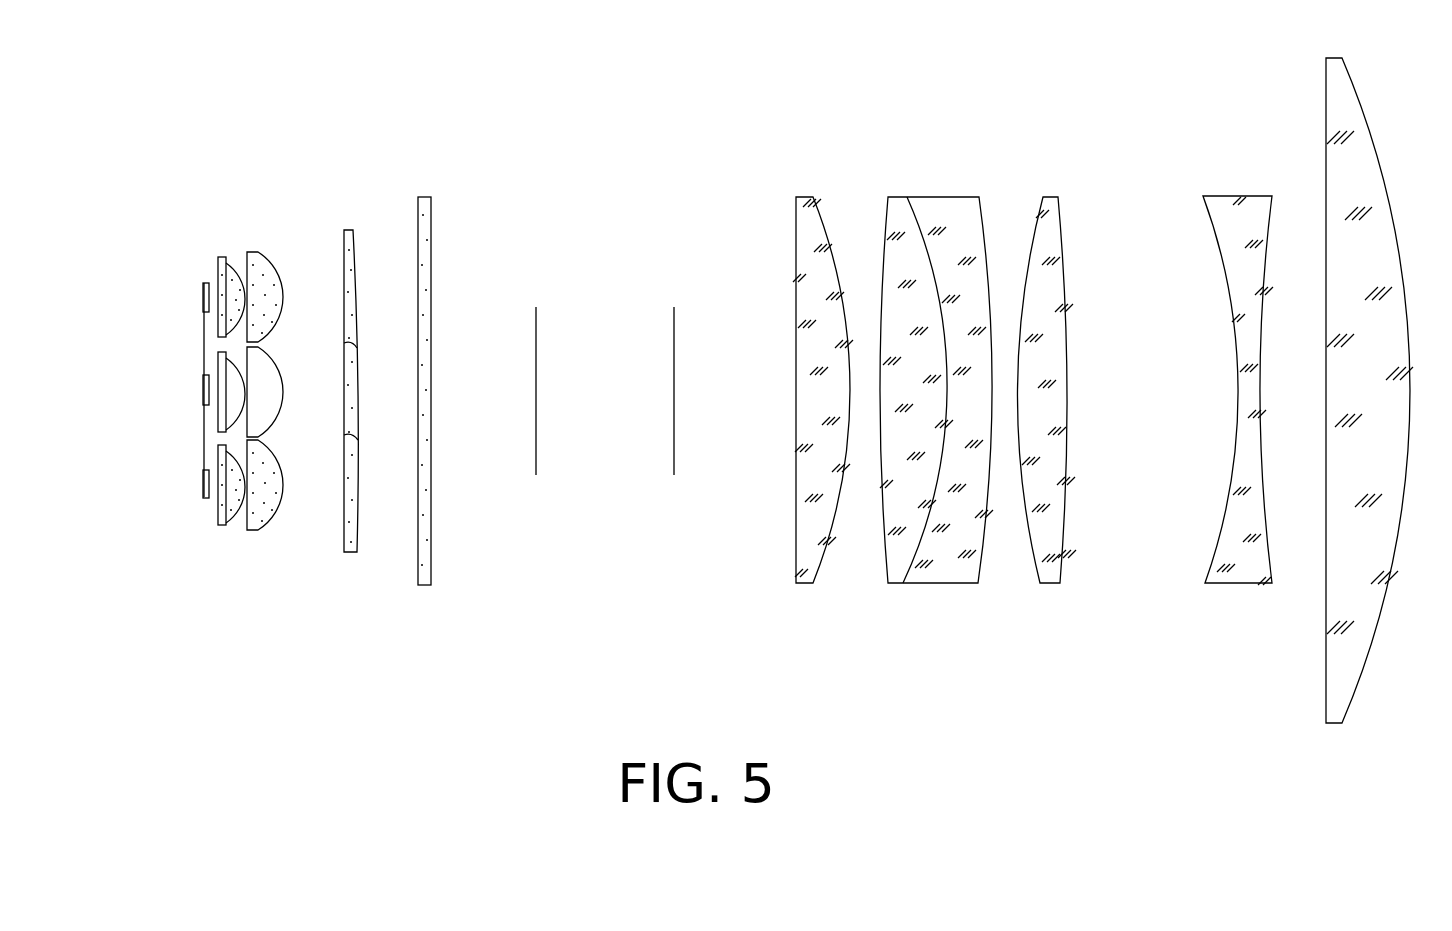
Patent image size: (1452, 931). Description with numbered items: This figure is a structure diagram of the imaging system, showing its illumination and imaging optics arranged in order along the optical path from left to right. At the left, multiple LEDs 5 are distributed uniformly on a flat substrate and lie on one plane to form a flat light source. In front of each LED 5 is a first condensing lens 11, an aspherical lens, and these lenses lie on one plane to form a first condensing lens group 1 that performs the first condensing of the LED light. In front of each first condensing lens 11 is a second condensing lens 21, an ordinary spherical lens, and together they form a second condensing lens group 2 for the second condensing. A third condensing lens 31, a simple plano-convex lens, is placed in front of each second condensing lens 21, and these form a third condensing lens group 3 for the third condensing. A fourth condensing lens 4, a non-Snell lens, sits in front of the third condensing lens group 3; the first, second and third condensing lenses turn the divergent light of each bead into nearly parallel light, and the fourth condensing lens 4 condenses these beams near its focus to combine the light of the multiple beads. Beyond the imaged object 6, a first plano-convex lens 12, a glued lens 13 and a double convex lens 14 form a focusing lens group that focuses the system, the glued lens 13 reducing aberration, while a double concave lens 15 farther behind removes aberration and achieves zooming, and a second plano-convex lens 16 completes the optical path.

The first condensing lens group 1 is at (219, 377).
The first condensing lens 11 is at (224, 523).
The second condensing lens group 2 is at (257, 390).
The second condensing lens 21 is at (262, 530).
The third condensing lens group 3 is at (327, 390).
The third condensing lens 31 is at (350, 552).
The fourth condensing lens 4 is at (424, 585).
The LED 5 is at (204, 497).
The imaged object 6 is at (612, 473).
The first plano-convex lens 12 is at (798, 583).
The glued lens 13 is at (900, 583).
The double convex lens 14 is at (1055, 583).
The double concave lens 15 is at (1231, 583).
The second plano-convex lens 16 is at (1334, 640).